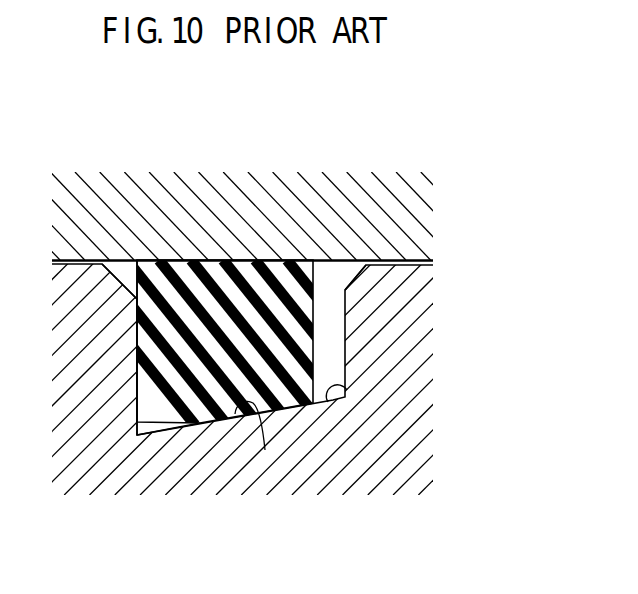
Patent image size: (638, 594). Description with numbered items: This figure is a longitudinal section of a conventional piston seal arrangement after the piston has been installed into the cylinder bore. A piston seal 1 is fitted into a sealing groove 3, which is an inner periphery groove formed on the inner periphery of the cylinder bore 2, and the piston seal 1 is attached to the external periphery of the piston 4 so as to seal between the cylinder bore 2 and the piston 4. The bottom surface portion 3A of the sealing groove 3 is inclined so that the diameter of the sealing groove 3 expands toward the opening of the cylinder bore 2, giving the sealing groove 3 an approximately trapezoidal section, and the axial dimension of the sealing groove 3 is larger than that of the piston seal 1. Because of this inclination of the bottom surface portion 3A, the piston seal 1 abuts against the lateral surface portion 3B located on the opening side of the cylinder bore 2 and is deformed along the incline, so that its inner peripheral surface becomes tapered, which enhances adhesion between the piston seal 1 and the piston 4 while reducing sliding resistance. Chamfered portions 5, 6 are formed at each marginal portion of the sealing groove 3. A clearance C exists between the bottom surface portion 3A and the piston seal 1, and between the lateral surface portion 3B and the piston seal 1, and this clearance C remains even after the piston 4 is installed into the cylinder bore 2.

The piston seal 1 is at (246, 290).
The cylinder bore 2 is at (410, 260).
The sealing groove 3 is at (333, 335).
The bottom surface portion 3A is at (347, 390).
The lateral surface portion 3B is at (138, 362).
The piston 4 is at (238, 195).
The chamfered portion 5 is at (118, 272).
The chamfered portion 6 is at (358, 275).
The clearance C is at (147, 428).